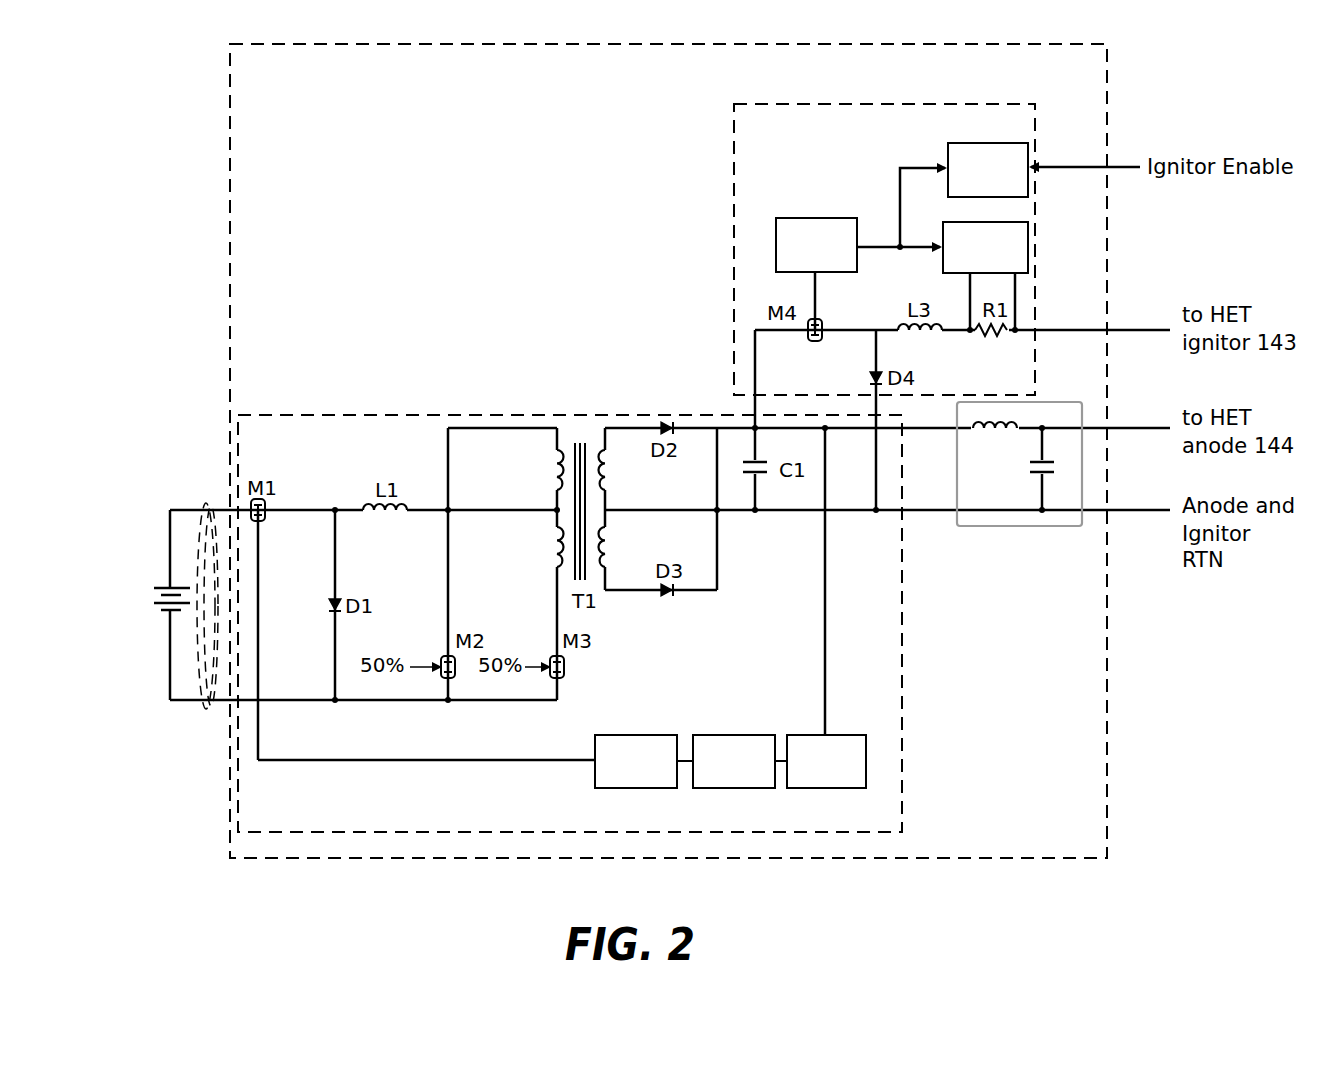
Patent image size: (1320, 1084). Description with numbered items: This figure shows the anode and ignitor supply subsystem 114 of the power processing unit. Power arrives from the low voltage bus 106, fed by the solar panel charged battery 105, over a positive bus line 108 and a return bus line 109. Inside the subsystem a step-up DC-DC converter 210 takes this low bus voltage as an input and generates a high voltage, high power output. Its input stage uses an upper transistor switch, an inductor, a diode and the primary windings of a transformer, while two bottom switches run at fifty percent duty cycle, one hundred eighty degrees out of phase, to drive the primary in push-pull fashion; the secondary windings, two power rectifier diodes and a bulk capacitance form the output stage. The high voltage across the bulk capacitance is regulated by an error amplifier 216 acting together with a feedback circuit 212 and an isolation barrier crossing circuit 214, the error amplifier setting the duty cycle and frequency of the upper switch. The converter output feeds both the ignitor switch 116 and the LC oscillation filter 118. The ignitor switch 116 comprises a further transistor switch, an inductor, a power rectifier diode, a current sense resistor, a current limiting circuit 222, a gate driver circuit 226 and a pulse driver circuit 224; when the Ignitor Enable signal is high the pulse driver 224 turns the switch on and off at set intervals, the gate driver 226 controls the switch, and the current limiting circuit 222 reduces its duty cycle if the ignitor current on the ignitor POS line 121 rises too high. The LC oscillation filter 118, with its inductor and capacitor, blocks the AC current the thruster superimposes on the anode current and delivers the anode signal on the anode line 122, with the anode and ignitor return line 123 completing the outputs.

The battery 105 is at (159, 623).
The low voltage bus 106 is at (206, 500).
The positive bus line 108 is at (192, 509).
The return bus line 109 is at (195, 700).
The anode and ignitor supply subsystem 114 is at (680, 84).
The ignitor switch 116 is at (748, 104).
The LC oscillation filter 118 is at (1072, 383).
The ignitor POS line 121 is at (1135, 330).
The anode POS line 122 is at (1133, 428).
The anode and ignitor return line 123 is at (1160, 512).
The step-up DC-DC converter 210 is at (893, 819).
The feedback circuit 212 is at (801, 735).
The isolation barrier crossing circuit 214 is at (733, 735).
The error amplifier 216 is at (637, 735).
The current limiting circuit 222 is at (958, 221).
The pulse driver circuit 224 is at (968, 143).
The gate driver circuit 226 is at (790, 217).